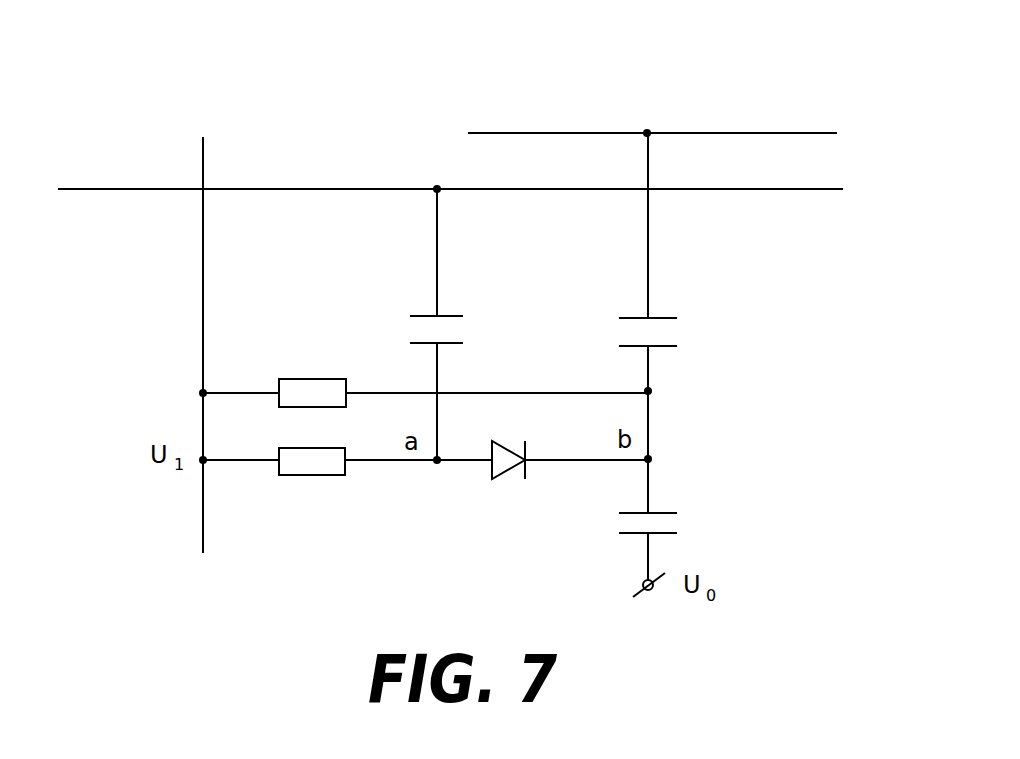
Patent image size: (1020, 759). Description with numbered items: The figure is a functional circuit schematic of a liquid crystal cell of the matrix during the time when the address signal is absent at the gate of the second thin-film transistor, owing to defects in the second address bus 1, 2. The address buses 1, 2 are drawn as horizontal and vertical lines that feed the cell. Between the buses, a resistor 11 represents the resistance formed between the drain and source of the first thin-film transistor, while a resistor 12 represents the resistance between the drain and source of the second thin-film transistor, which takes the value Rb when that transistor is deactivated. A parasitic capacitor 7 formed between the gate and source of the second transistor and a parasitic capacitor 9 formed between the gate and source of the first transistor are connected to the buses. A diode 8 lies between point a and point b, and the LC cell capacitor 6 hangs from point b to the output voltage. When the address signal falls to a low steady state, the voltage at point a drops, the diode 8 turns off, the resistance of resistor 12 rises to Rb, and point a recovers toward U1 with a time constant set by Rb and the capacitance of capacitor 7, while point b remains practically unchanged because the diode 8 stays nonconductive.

The address bus 1 is at (203, 165).
The address bus 2 is at (133, 189).
The LC cell capacitor 6 is at (665, 512).
The parasitic capacitor 7 is at (457, 316).
The diode 8 is at (494, 477).
The parasitic capacitor 9 is at (662, 318).
The resistor 11 is at (298, 379).
The resistor 12 is at (300, 475).